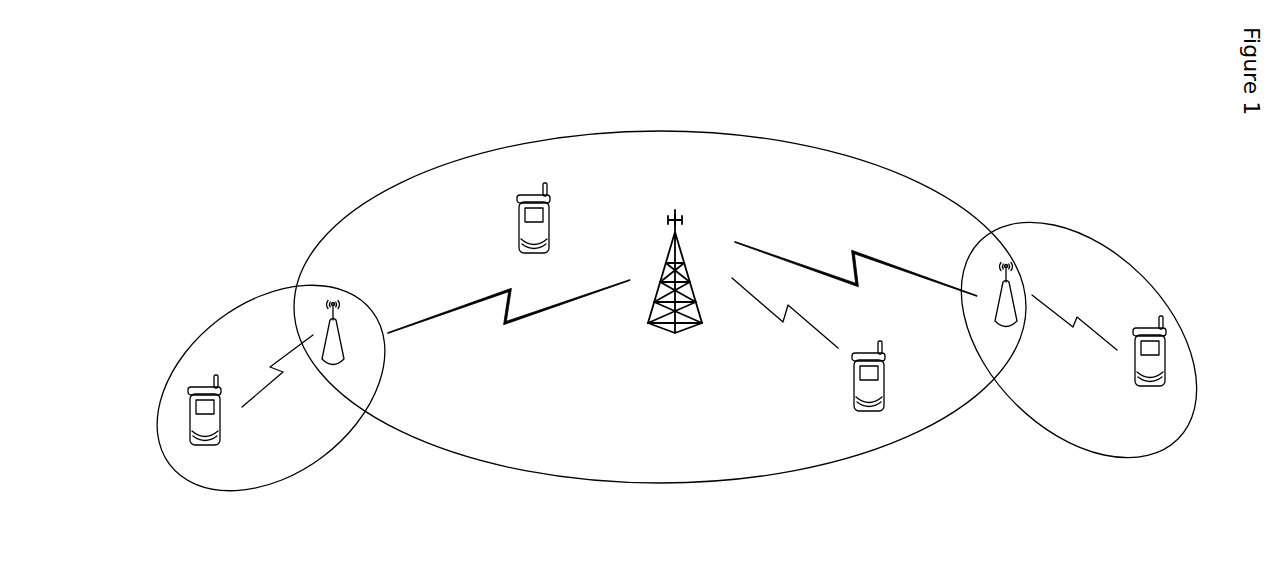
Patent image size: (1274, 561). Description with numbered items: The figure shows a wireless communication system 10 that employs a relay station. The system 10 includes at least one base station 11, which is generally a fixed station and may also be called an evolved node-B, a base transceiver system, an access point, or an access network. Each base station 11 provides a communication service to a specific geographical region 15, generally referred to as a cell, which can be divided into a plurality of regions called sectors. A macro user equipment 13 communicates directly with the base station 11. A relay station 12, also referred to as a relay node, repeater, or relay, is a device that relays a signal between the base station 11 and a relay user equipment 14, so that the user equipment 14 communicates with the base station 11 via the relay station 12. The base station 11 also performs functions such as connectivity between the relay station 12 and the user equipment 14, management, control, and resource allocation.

The wireless communication system 10 is at (843, 115).
The base station 11 is at (679, 243).
The relay station 12 is at (341, 332).
The user equipment 13 is at (516, 228).
The user equipment 14 is at (225, 424).
The geographical region 15 is at (645, 132).